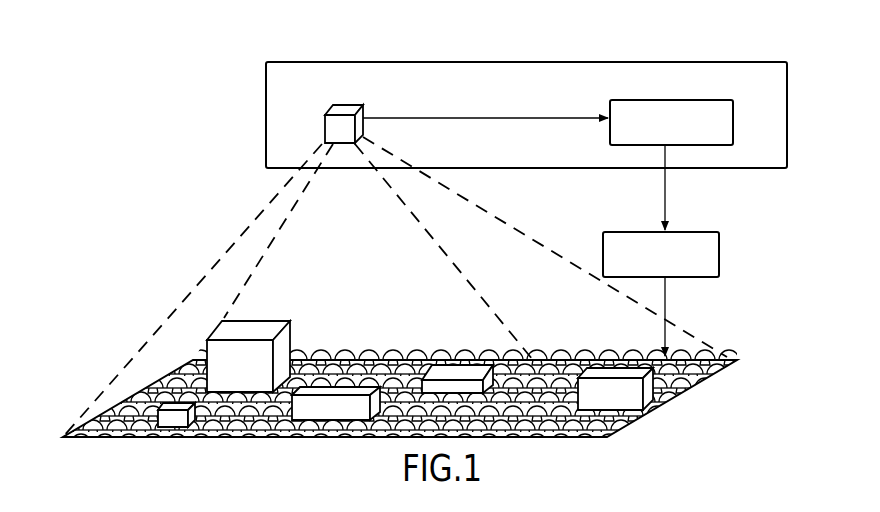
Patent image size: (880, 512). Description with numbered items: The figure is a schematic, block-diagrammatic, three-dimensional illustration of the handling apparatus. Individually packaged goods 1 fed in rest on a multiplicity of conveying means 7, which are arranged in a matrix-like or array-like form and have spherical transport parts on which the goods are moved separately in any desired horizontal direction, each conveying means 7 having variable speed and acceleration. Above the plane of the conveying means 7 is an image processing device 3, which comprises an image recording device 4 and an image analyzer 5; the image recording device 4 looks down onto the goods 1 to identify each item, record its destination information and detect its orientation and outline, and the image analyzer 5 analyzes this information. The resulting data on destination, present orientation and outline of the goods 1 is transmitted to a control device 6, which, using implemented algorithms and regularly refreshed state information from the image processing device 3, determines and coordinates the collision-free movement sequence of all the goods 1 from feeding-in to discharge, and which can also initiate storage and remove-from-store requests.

The individually packaged goods 1 is at (608, 385).
The image processing device 3 is at (526, 87).
The image recording device 4 is at (395, 271).
The image analyzer 5 is at (681, 165).
The control device 6 is at (671, 294).
The conveying means 7 is at (395, 362).